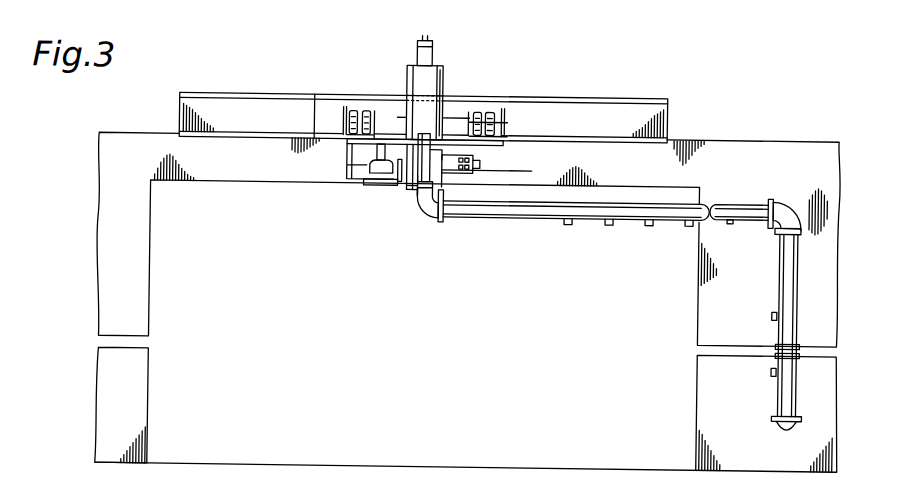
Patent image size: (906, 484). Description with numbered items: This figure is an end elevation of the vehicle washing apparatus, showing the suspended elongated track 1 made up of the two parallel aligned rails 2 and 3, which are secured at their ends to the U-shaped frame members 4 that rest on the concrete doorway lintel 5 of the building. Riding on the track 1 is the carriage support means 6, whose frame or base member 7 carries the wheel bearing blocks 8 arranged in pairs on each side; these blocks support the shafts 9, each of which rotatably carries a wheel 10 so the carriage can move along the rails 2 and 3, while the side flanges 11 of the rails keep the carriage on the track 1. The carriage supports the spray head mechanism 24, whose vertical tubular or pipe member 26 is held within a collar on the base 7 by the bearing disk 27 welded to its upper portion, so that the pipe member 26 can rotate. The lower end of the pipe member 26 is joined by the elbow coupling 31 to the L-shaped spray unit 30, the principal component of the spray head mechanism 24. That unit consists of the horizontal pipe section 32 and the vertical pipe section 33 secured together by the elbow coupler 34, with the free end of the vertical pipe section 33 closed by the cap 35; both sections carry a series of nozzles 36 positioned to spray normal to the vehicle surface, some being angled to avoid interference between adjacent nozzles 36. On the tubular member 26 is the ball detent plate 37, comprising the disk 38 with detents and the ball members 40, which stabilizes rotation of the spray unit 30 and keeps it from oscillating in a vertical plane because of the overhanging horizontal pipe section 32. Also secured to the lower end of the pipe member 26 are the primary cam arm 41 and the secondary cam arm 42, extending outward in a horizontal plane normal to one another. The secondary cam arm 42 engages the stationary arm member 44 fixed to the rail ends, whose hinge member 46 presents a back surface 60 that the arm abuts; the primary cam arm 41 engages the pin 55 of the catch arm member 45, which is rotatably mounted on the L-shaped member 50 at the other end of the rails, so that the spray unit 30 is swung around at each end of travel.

The elongated track 1 is at (343, 125).
The rail 2 is at (338, 142).
The rail 3 is at (493, 139).
The U-shaped frame member 4 is at (229, 108).
The concrete doorway lintel 5 is at (214, 174).
The carriage support means 6 is at (459, 134).
The frame or base member 7 is at (390, 117).
The wheel bearing block 8 is at (364, 113).
The shaft 9 is at (502, 122).
The wheel 10 is at (351, 113).
The side flange 11 is at (342, 114).
The spray head mechanism 24 is at (430, 47).
The vertical tubular or pipe member 26 is at (413, 53).
The bearing disk 27 is at (404, 96).
The L-shaped spray unit 30 is at (744, 201).
The elbow coupling 31 is at (419, 217).
The horizontal pipe section 32 is at (489, 217).
The vertical pipe section 33 is at (800, 285).
The elbow coupler 34 is at (788, 200).
The cap 35 is at (783, 426).
The nozzle 36 is at (566, 224).
The ball detent plate 37 is at (404, 191).
The disk 38 is at (428, 176).
The ball member 40 is at (428, 153).
The primary cam arm 41 is at (405, 151).
The secondary cam arm 42 is at (393, 180).
The stationary arm member 44 is at (478, 163).
The catch arm member 45 is at (368, 173).
The hinge member 46 is at (439, 223).
The L-shaped member 50 is at (383, 182).
The pin 55 is at (376, 153).
The back surface 60 is at (497, 178).